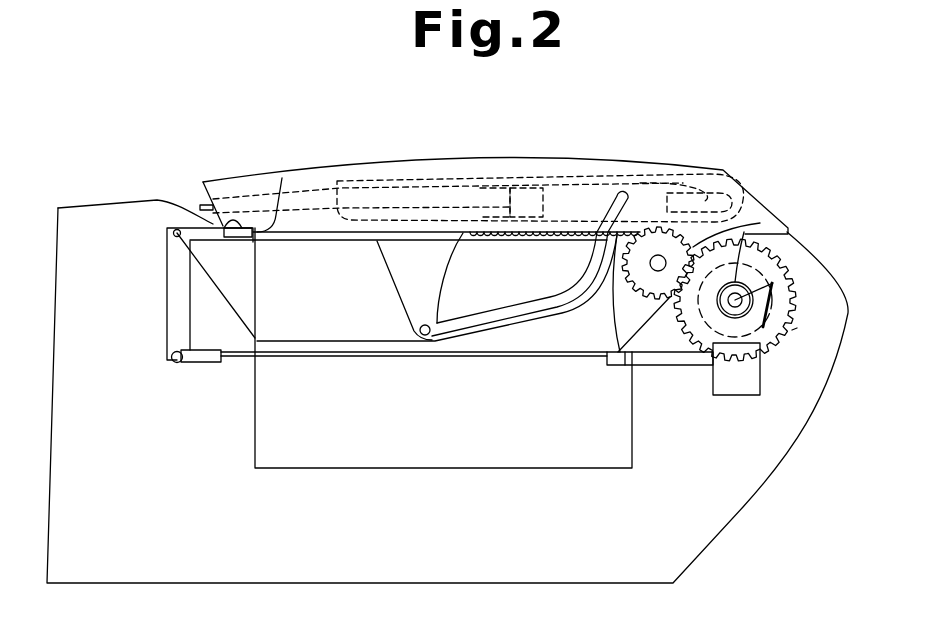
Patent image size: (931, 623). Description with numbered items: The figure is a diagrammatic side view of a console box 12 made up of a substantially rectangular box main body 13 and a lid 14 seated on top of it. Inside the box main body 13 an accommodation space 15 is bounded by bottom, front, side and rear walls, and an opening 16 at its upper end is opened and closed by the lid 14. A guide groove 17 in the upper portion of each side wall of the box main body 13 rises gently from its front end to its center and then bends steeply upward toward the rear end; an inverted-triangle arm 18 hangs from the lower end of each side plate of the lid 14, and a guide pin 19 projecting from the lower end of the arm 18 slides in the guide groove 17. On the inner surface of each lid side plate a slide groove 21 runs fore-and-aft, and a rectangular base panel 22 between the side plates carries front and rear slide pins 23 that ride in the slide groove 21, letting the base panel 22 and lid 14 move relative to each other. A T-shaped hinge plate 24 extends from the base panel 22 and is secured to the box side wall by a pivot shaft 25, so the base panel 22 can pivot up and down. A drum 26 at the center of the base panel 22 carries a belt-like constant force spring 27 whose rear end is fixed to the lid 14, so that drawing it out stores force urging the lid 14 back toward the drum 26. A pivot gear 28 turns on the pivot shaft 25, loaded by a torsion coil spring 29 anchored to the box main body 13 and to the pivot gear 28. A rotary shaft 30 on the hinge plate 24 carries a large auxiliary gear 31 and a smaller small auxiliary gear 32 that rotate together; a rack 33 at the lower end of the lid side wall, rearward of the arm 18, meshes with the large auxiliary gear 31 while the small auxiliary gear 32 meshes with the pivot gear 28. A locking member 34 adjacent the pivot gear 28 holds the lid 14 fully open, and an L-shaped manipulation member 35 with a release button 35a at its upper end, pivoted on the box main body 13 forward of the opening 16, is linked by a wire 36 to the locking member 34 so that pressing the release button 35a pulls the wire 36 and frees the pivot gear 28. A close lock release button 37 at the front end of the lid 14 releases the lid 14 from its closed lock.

The console box 12 is at (758, 160).
The box main body 13 is at (850, 312).
The lid 14 is at (258, 172).
The accommodation space 15 is at (449, 446).
The opening 16 is at (282, 178).
The guide groove 17 is at (475, 317).
The arm 18 is at (389, 273).
The guide pin 19 is at (414, 322).
The slide groove 21 is at (418, 210).
The base panel 22 is at (493, 190).
The slide pin 23 is at (543, 190).
The hinge plate 24 is at (607, 352).
The pivot shaft 25 is at (742, 284).
The drum 26 is at (647, 176).
The constant force spring 27 is at (697, 184).
The pivot gear 28 is at (791, 330).
The torsion coil spring 29 is at (746, 233).
The rotary shaft 30 is at (612, 305).
The large auxiliary gear 31 is at (620, 366).
The small auxiliary gear 32 is at (663, 308).
The rack 33 is at (534, 235).
The locking member 34 is at (737, 396).
The manipulation member 35 is at (167, 285).
The release button 35a is at (233, 217).
The wire 36 is at (341, 362).
The close lock release button 37 is at (197, 201).